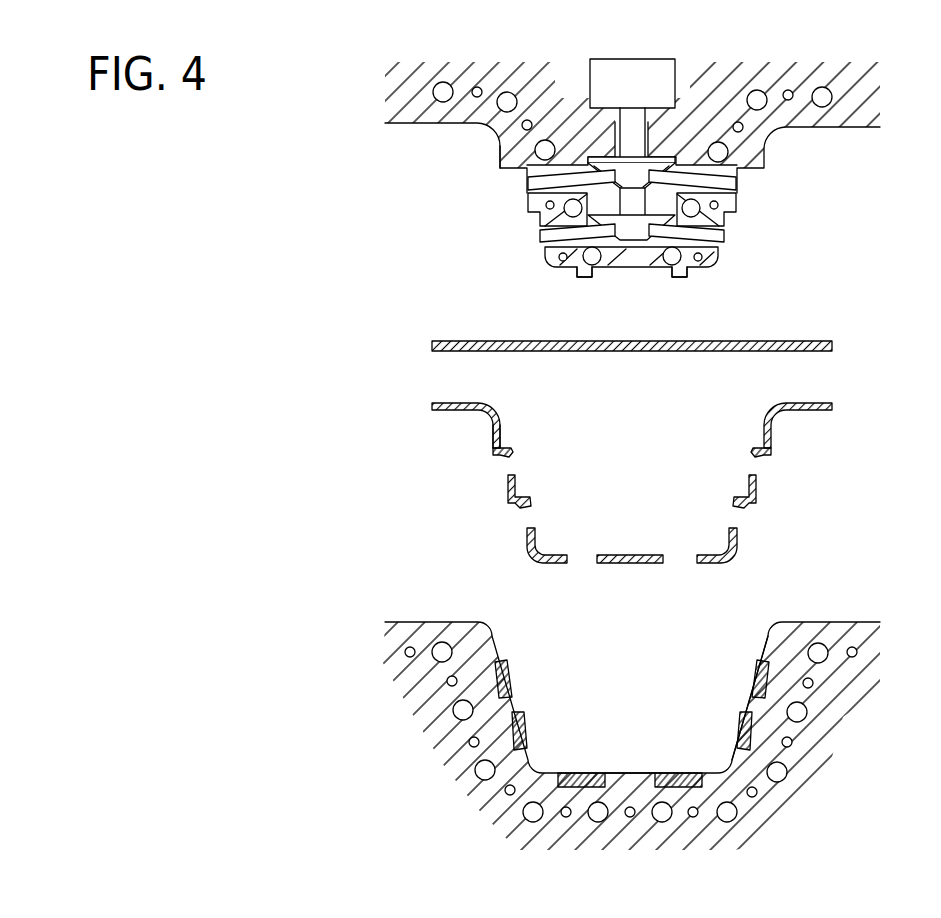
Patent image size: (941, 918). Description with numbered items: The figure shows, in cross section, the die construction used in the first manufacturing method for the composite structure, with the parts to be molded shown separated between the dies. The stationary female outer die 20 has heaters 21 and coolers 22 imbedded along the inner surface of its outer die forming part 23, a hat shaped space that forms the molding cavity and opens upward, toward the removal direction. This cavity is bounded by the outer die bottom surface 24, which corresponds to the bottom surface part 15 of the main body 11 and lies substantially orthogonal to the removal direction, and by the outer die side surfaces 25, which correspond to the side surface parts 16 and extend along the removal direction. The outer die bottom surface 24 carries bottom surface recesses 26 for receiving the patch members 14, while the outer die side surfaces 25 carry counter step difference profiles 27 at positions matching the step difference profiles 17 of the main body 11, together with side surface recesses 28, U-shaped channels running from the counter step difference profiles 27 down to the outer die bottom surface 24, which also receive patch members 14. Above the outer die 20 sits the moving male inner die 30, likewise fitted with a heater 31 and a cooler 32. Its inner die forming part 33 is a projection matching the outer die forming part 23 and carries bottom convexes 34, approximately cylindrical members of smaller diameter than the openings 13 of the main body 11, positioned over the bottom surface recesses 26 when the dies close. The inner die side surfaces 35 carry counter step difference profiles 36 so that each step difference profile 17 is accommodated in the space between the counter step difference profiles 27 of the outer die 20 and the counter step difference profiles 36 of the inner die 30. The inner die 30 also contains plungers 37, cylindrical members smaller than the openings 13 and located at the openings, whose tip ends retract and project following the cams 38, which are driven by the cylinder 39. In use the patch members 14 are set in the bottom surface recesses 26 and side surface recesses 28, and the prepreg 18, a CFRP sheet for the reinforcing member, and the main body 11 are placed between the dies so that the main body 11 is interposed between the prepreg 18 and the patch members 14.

The main body 11 is at (634, 462).
The opening 13 is at (512, 478).
The patch member 14 is at (753, 681).
The bottom surface part 15 is at (553, 565).
The side surface part 16 is at (494, 427).
The step difference profile 17 is at (492, 451).
The prepreg 18 is at (818, 341).
The outer die 20 is at (647, 703).
The heater 21 is at (790, 744).
The cooler 22 is at (800, 716).
The outer die forming part 23 is at (632, 684).
The outer die bottom surface 24 is at (630, 772).
The outer die side surface 25 is at (768, 640).
The bottom surface recess 26 is at (683, 772).
The counter step difference profile 27 is at (502, 663).
The side surface recess 28 is at (526, 743).
The inner die 30 is at (649, 127).
The heater 31 is at (789, 101).
The cooler 32 is at (823, 107).
The inner die forming part 33 is at (553, 266).
The bottom convex 34 is at (585, 279).
The inner die side surface 35 is at (500, 157).
The counter step difference profile 36 is at (643, 240).
The plunger 37 is at (527, 184).
The cam 38 is at (612, 165).
The cylinder 39 is at (660, 58).